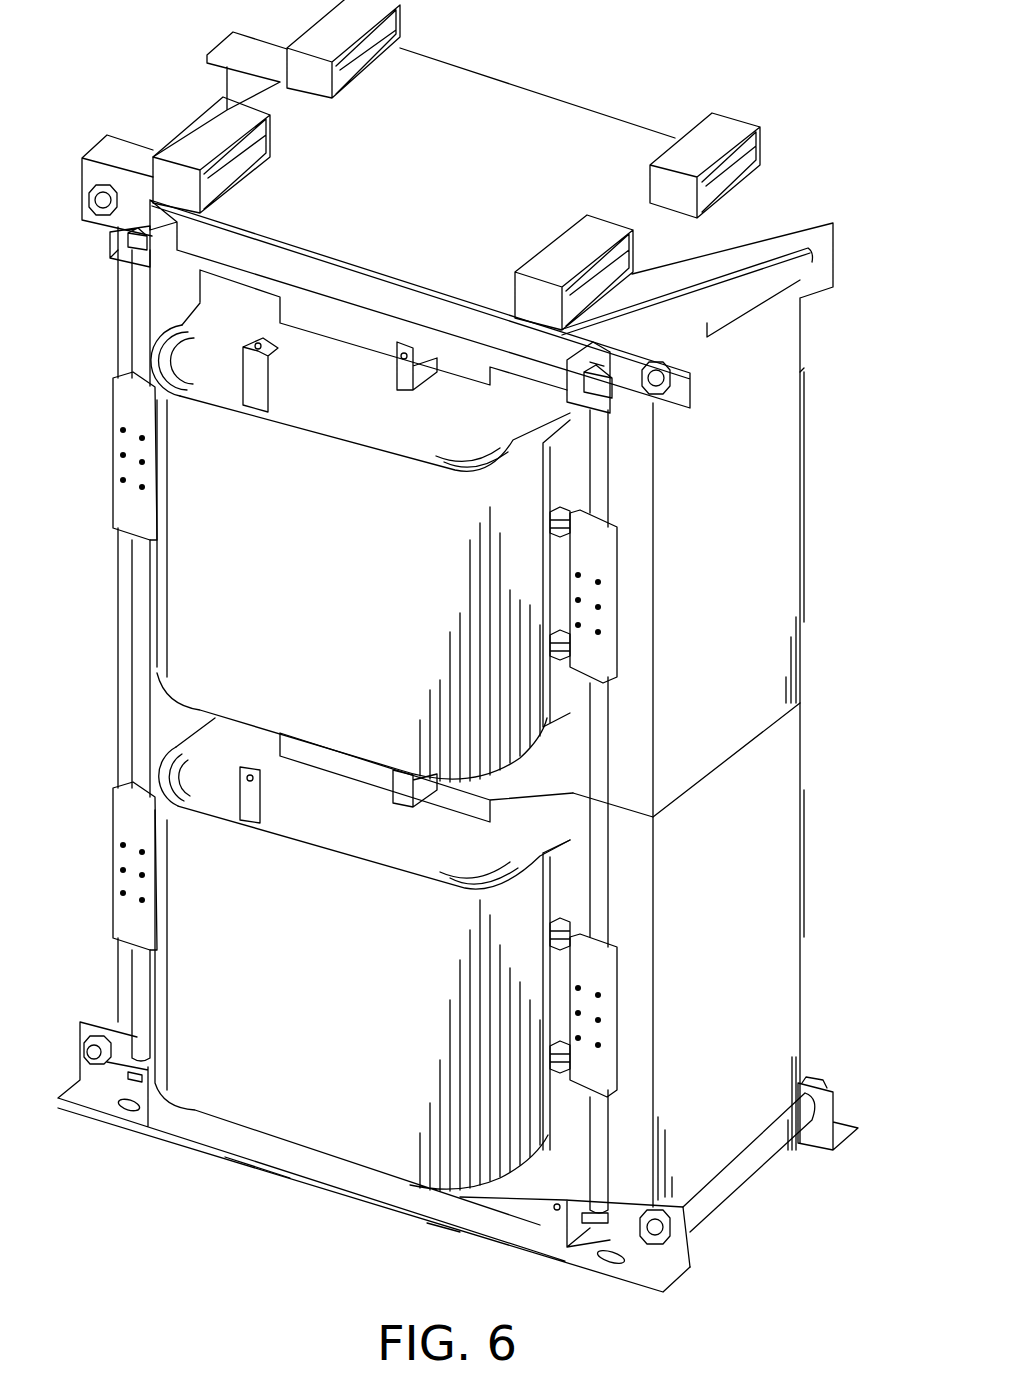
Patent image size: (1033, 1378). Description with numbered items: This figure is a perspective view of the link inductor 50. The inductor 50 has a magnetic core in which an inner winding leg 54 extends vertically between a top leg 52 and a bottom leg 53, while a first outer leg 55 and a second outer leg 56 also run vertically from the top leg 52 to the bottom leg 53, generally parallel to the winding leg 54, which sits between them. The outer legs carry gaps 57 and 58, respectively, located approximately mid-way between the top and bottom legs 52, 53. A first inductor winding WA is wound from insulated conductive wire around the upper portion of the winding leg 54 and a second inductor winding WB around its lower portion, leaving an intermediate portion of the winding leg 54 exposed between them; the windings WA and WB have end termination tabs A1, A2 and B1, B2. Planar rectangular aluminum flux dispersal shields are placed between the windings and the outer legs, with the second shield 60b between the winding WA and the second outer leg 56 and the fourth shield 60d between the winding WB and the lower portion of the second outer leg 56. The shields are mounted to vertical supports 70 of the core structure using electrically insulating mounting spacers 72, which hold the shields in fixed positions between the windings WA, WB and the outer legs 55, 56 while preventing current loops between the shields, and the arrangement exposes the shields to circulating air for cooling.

The link inductor 50 is at (812, 55).
The top leg 52 is at (703, 262).
The bottom leg 53 is at (570, 1130).
The inner winding leg 54 is at (498, 778).
The first outer leg 55 is at (117, 728).
The second outer leg 56 is at (772, 593).
The gap 57 is at (132, 650).
The gap 58 is at (718, 770).
The second shield 60b is at (540, 484).
The fourth shield 60d is at (545, 840).
The vertical supports 70 is at (140, 320).
The mounting spacers 72 is at (560, 520).
The tab A1 is at (241, 368).
The tab A2 is at (417, 397).
The tab B1 is at (241, 780).
The tab B2 is at (397, 804).
The first inductor winding WA is at (193, 570).
The second inductor winding WB is at (273, 1098).